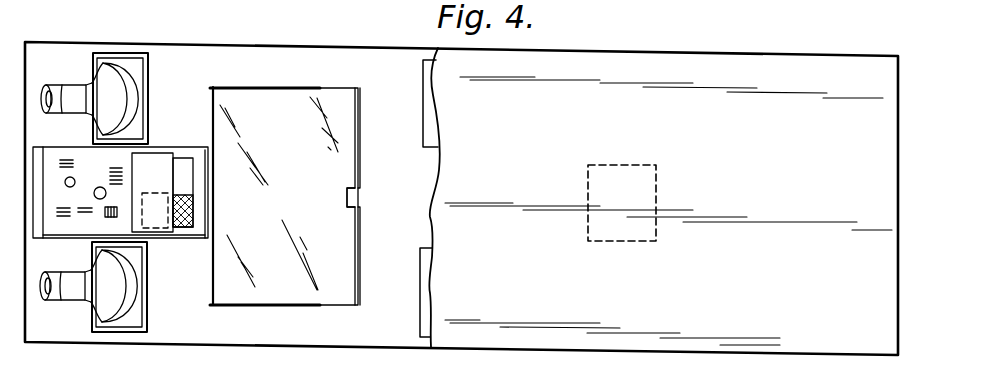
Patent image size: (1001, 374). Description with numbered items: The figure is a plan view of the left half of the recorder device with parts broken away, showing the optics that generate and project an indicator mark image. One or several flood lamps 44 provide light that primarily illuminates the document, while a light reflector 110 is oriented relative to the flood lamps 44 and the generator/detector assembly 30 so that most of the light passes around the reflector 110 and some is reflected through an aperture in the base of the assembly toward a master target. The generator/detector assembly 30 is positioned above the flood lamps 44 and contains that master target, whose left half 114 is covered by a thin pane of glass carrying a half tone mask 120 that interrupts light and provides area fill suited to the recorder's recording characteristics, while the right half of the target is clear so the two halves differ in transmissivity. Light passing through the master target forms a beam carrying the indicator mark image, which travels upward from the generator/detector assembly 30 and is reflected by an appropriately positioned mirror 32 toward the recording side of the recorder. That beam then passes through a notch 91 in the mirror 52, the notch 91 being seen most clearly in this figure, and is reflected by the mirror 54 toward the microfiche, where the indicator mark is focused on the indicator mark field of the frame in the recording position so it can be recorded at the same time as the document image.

The generator/detector assembly 30 is at (76, 239).
The mirror 32 is at (153, 163).
The flood lamps 44 is at (85, 85).
The mirror 52 is at (297, 213).
The mirror 54 is at (633, 188).
The notch 91 is at (360, 197).
The light reflector 110 is at (148, 64).
The left half of master target 114 is at (187, 174).
The half tone mask 120 is at (182, 228).